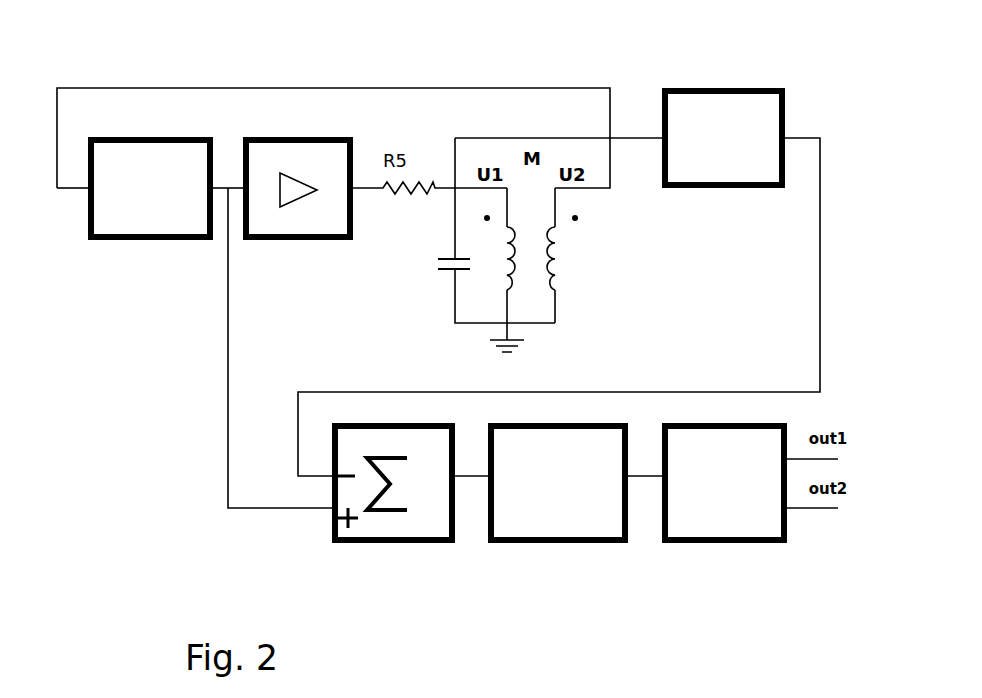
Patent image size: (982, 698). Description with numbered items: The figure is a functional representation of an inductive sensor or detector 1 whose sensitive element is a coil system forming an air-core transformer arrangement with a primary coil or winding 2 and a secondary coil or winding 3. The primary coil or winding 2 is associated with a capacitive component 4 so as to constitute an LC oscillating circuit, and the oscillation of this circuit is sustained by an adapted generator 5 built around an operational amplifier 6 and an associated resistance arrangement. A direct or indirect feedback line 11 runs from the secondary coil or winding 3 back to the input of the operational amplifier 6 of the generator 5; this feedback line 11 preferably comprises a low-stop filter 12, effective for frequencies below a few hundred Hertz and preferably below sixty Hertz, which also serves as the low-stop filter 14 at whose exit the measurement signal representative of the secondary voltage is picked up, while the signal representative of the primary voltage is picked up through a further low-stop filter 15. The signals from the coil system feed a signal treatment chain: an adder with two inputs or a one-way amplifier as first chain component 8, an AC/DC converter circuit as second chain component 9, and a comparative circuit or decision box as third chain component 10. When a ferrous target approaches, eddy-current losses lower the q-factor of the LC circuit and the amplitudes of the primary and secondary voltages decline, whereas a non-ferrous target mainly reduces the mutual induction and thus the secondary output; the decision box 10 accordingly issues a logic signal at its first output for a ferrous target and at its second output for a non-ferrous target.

The sensor or detector 1 is at (197, 458).
The primary coil or winding 2 is at (478, 278).
The secondary coil or winding 3 is at (598, 273).
The capacitive component 4 is at (424, 276).
The generator 5 is at (297, 246).
The operational amplifier 6 is at (296, 174).
The first chain component 8 is at (397, 550).
The second chain component 9 is at (562, 550).
The third chain component 10 is at (727, 550).
The feedback line 11 is at (258, 86).
The low-stop filter 12 is at (140, 223).
The low-stop filter 14 is at (139, 246).
The low-stop filter 15 is at (725, 195).